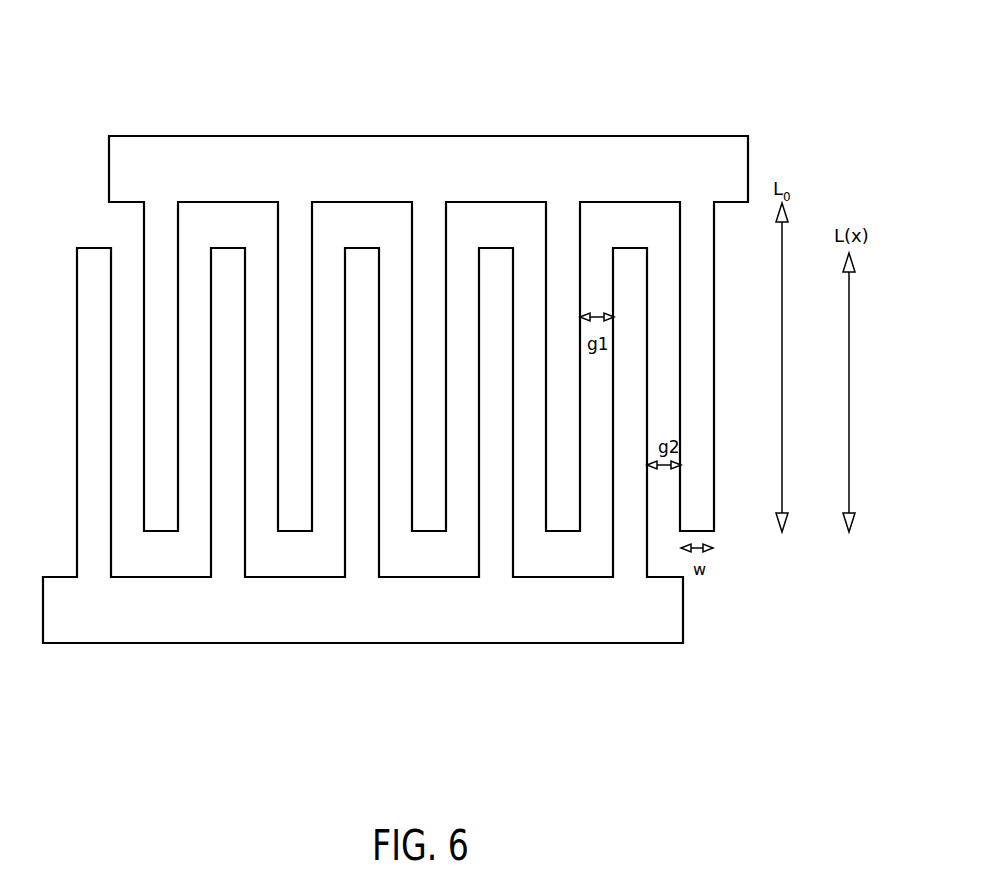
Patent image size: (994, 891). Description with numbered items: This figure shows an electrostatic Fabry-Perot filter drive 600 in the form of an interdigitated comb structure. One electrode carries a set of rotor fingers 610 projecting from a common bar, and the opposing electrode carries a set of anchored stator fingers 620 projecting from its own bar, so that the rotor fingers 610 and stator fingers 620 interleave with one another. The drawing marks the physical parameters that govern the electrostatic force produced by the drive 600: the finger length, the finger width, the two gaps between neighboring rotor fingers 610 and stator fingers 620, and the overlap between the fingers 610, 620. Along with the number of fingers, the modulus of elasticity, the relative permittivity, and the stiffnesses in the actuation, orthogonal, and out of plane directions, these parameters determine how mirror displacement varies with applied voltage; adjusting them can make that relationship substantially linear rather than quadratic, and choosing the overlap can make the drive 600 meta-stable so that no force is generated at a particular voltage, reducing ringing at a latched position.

The drive 600 is at (241, 36).
The rotor fingers 610 is at (109, 159).
The anchored stator fingers 620 is at (77, 498).